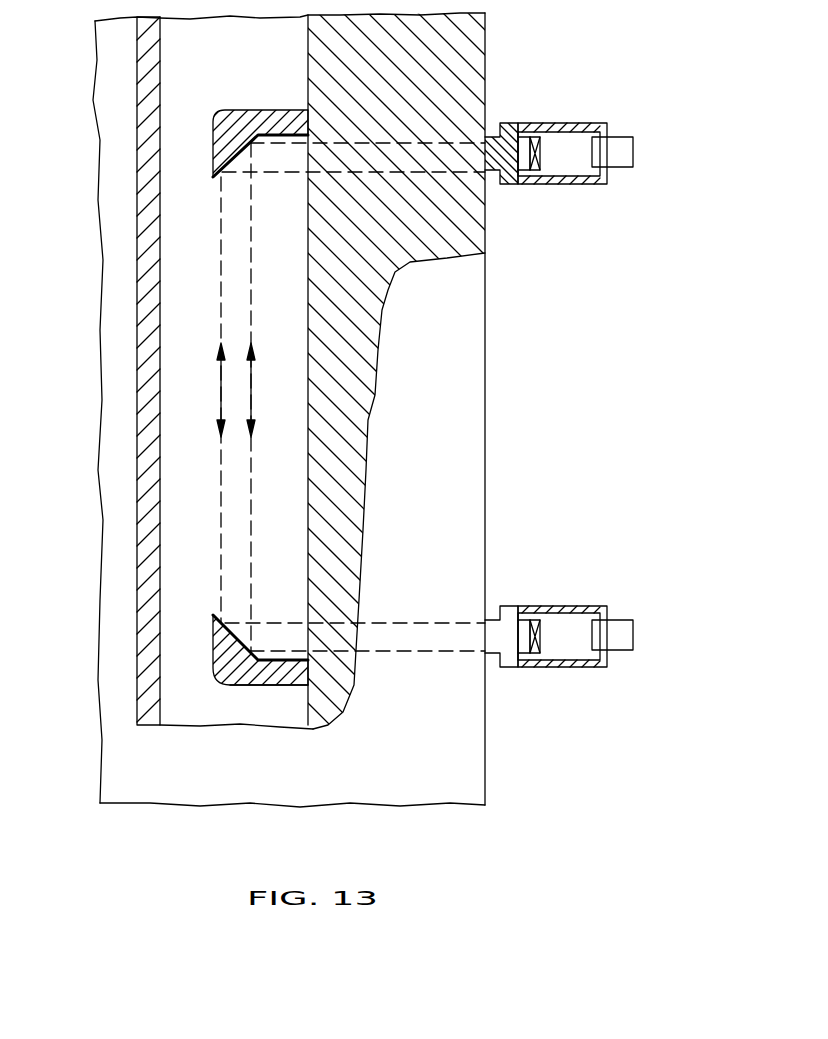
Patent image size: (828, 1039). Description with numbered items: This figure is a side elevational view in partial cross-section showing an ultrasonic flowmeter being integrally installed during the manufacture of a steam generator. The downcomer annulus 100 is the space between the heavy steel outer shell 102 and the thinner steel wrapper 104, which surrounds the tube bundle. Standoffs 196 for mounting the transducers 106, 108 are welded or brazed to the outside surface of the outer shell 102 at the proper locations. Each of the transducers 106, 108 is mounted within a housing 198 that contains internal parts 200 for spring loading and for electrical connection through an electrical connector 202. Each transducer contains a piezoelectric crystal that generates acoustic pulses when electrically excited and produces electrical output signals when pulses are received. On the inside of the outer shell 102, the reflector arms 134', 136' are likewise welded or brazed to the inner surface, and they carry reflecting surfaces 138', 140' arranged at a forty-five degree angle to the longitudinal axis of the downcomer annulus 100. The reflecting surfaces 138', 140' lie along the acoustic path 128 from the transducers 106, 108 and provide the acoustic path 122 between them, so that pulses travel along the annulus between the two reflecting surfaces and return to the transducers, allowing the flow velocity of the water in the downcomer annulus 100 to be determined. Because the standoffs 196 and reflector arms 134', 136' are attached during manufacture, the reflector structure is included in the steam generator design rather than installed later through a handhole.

The downcomer annulus 100 is at (188, 540).
The outer shell 102 is at (467, 60).
The wrapper 104 is at (147, 453).
The ultrasonic transducer 106 is at (540, 138).
The ultrasonic transducer 108 is at (540, 621).
The acoustic path 122 is at (222, 404).
The acoustic path 128 is at (257, 652).
The reflector arm 134' is at (242, 720).
The reflector arm 136' is at (246, 126).
The reflecting surface 138' is at (239, 630).
The reflecting surface 140' is at (328, 181).
The standoff 196 is at (507, 124).
The housing 198 is at (533, 184).
The internal parts 200 is at (572, 167).
The electrical connector 202 is at (613, 143).